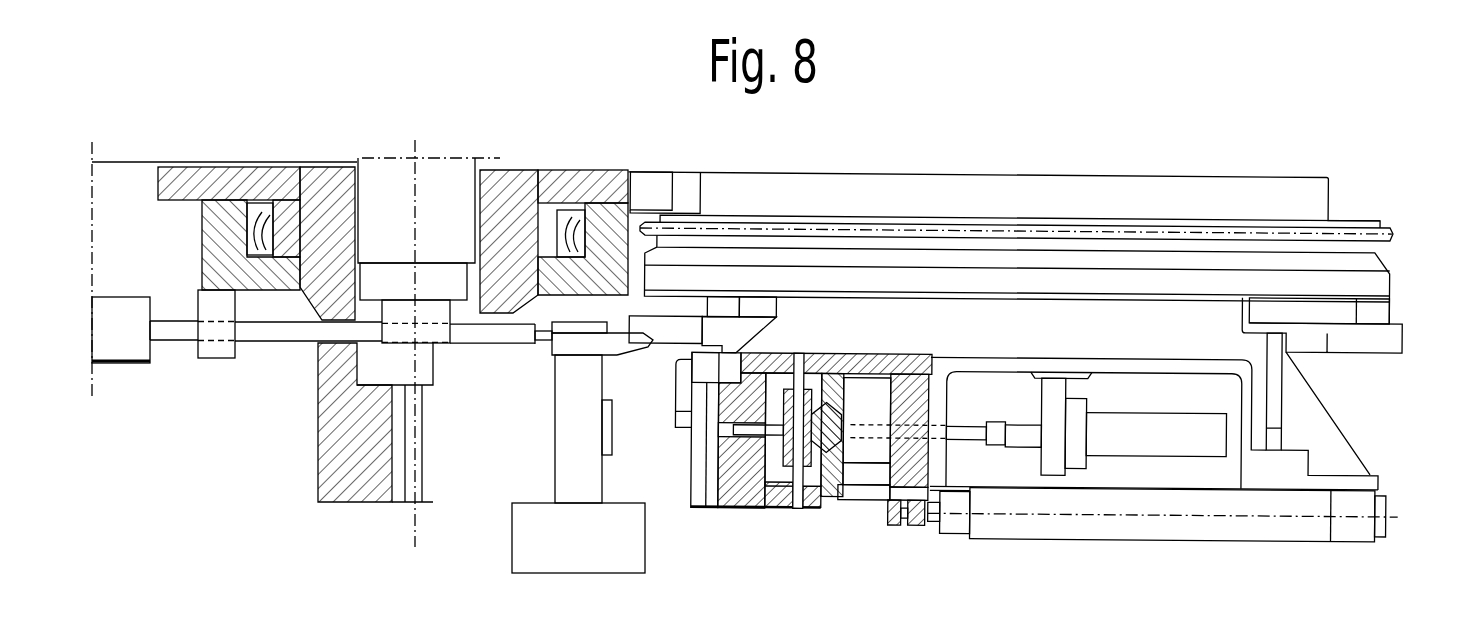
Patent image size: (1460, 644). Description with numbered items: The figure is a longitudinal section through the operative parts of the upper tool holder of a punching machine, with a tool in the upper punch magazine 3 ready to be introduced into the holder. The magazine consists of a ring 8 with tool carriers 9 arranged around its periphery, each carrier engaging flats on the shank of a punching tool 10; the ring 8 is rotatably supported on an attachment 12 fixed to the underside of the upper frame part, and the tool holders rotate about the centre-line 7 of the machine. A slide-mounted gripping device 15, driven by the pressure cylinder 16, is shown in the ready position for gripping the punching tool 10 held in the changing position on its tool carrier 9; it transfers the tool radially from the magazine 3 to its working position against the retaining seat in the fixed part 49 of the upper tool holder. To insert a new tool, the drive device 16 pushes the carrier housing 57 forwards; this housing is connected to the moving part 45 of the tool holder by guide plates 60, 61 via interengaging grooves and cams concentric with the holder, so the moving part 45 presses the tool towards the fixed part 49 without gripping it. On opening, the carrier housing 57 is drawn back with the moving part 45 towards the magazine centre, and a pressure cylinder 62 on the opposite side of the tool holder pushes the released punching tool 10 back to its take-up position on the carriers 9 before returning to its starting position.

The upper punch magazine 3 is at (1365, 174).
The centre-line of the tool holders 7 is at (415, 158).
The ring 8 is at (1405, 325).
The tool carrier 9 is at (623, 350).
The punching tool 10 is at (552, 392).
The attachment 12 is at (1248, 175).
The gripping device 15 is at (744, 521).
The pressure cylinder 16 is at (1058, 526).
The moving part of the upper tool holder 45 is at (762, 506).
The fixed part of the upper tool holder 49 is at (318, 420).
The carrier housing 57 is at (908, 524).
The guide plate 60 is at (823, 351).
The guide plate 61 is at (817, 507).
The pressure cylinder 62 is at (122, 352).